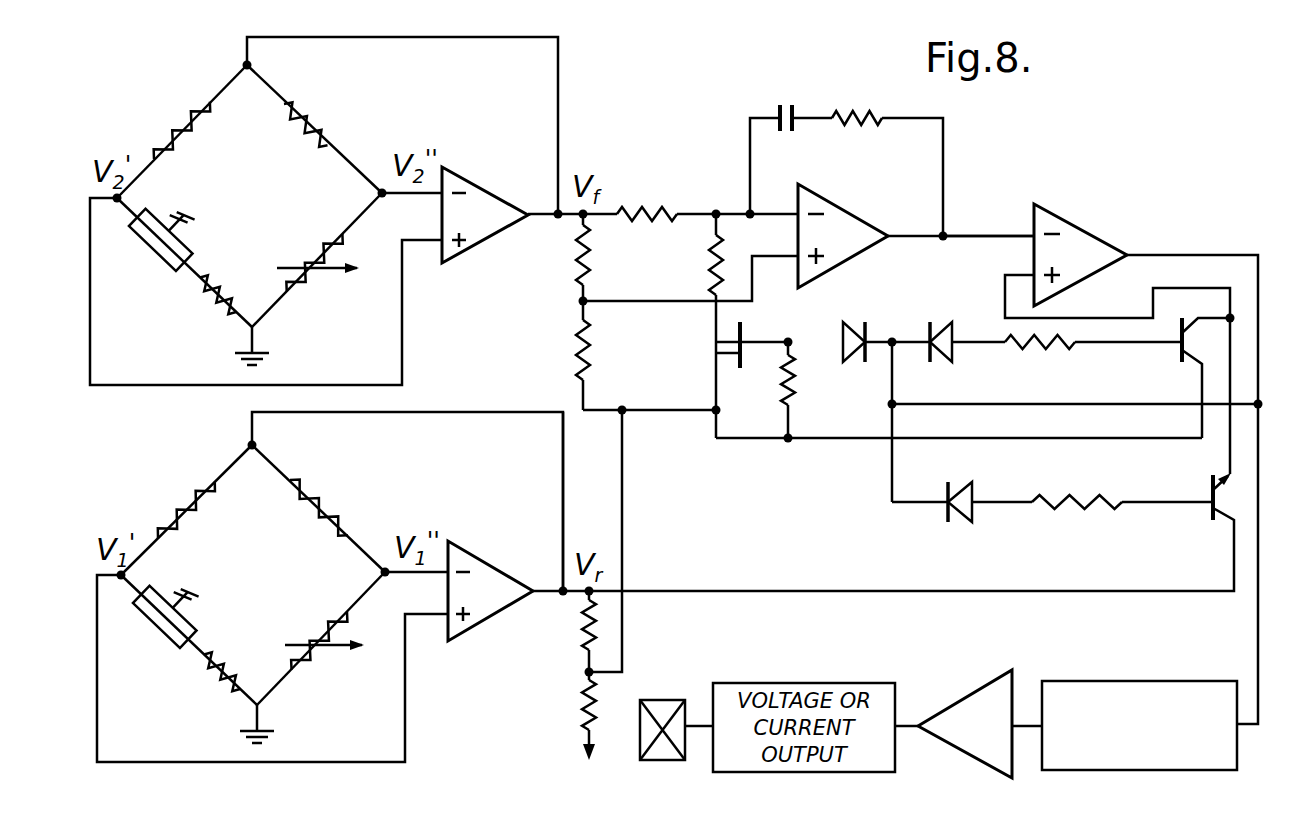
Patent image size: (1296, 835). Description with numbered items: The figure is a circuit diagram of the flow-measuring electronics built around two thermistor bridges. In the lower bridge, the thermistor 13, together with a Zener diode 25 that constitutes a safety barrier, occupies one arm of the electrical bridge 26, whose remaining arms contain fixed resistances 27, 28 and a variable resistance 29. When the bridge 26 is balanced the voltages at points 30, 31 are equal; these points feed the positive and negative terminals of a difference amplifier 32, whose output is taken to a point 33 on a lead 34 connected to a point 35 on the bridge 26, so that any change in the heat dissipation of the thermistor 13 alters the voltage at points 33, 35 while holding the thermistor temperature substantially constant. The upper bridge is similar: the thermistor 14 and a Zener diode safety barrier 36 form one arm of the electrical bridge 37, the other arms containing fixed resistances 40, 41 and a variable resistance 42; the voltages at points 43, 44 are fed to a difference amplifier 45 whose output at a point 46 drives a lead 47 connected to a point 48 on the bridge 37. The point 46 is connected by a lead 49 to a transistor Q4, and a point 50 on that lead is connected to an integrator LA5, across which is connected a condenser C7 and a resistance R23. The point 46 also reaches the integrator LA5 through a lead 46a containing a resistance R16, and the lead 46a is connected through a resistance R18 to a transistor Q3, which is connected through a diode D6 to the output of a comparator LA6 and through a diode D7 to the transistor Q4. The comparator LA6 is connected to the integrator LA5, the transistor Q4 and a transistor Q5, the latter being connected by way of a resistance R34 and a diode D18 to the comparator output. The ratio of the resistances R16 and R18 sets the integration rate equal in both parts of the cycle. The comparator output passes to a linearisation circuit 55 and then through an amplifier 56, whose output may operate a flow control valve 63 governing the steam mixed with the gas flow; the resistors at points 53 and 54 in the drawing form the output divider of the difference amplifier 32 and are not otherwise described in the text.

The thermistor 13 is at (217, 688).
The thermistor 14 is at (215, 300).
The Zener diode 25 is at (158, 639).
The electrical bridge 26 is at (252, 593).
The fixed resistance 27 is at (197, 478).
The fixed resistance 28 is at (327, 507).
The variable resistance 29 is at (328, 658).
The point 30 is at (126, 575).
The point 31 is at (388, 576).
The difference amplifier 32 is at (510, 573).
The point 33 is at (567, 597).
The lead 34 is at (563, 490).
The point 35 is at (256, 446).
The Zener diode safety barrier 36 is at (157, 259).
The electrical bridge 37 is at (243, 214).
The fixed resistance 40 is at (178, 100).
The fixed resistance 41 is at (325, 120).
The variable resistance 42 is at (310, 290).
The point 43 is at (124, 197).
The point 44 is at (386, 197).
The difference amplifier 45 is at (492, 188).
The point 46 is at (553, 220).
The lead 46a is at (700, 212).
The lead 47 is at (560, 125).
The point 48 is at (252, 66).
The lead 49 is at (693, 412).
The point 50 is at (580, 301).
The voltage divider junction 53 is at (583, 644).
The resistor 54 is at (588, 725).
The linearisation circuit 55 is at (1238, 682).
The amplifier 56 is at (972, 688).
The flow control valve 63 is at (670, 700).
The resistance R16 is at (666, 182).
The resistance R18 is at (712, 270).
The resistance R23 is at (856, 108).
The condenser C7 is at (790, 101).
The integrator LA5 is at (855, 200).
The comparator LA6 is at (1088, 225).
The transistor Q3 is at (716, 341).
The transistor Q4 is at (1192, 327).
The transistor Q5 is at (1228, 521).
The diode D6 is at (850, 320).
The diode D7 is at (960, 326).
The diode D18 is at (968, 521).
The resistance R34 is at (1112, 521).